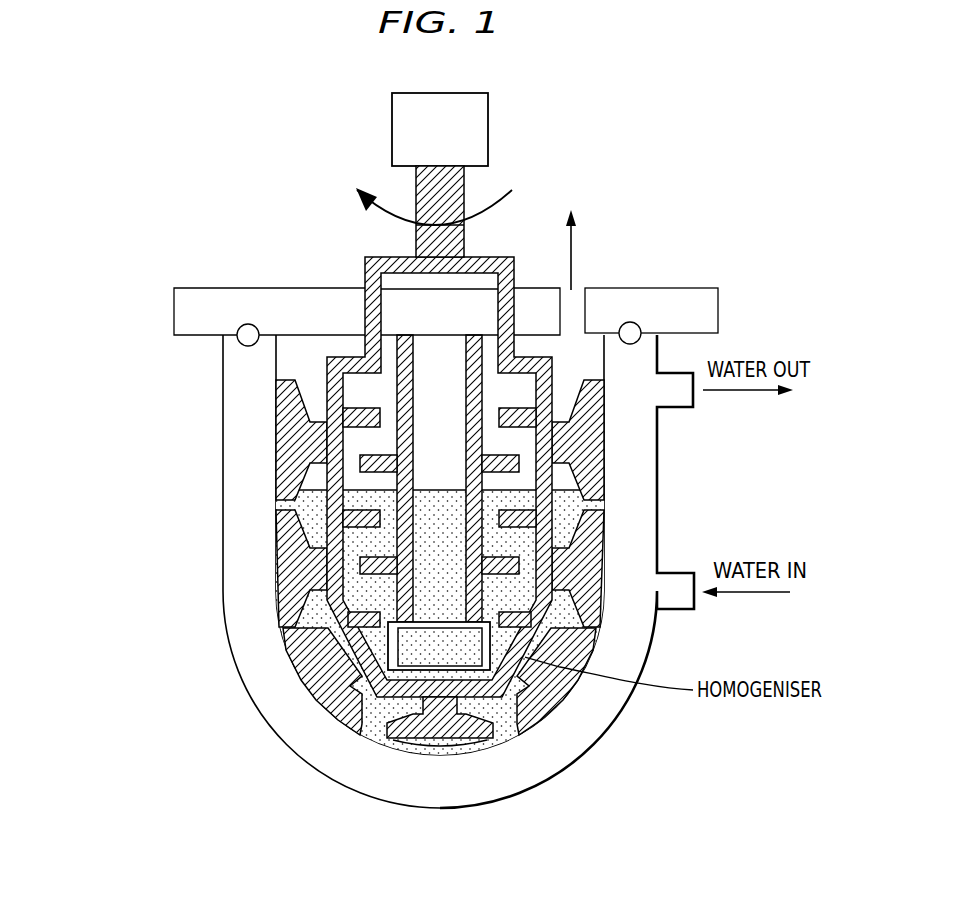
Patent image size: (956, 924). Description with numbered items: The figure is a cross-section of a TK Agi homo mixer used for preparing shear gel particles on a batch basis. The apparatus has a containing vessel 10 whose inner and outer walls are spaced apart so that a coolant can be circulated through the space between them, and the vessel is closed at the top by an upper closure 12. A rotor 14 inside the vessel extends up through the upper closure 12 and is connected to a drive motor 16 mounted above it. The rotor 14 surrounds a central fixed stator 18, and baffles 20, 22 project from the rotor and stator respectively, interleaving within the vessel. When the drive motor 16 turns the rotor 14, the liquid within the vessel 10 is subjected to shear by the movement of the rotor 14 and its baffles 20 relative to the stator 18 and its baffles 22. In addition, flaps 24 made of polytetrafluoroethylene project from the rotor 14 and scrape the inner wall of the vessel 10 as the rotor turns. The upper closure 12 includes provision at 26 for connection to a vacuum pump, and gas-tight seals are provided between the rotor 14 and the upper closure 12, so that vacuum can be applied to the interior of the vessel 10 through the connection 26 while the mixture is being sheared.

The containing vessel 10 is at (672, 528).
The upper closure 12 is at (690, 280).
The rotor 14 is at (320, 373).
The drive motor 16 is at (478, 123).
The central fixed stator 18 is at (293, 498).
The baffles 20 is at (360, 406).
The baffles 22 is at (690, 433).
The flaps 24 is at (593, 597).
The connection to a vacuum pump 26 is at (578, 298).